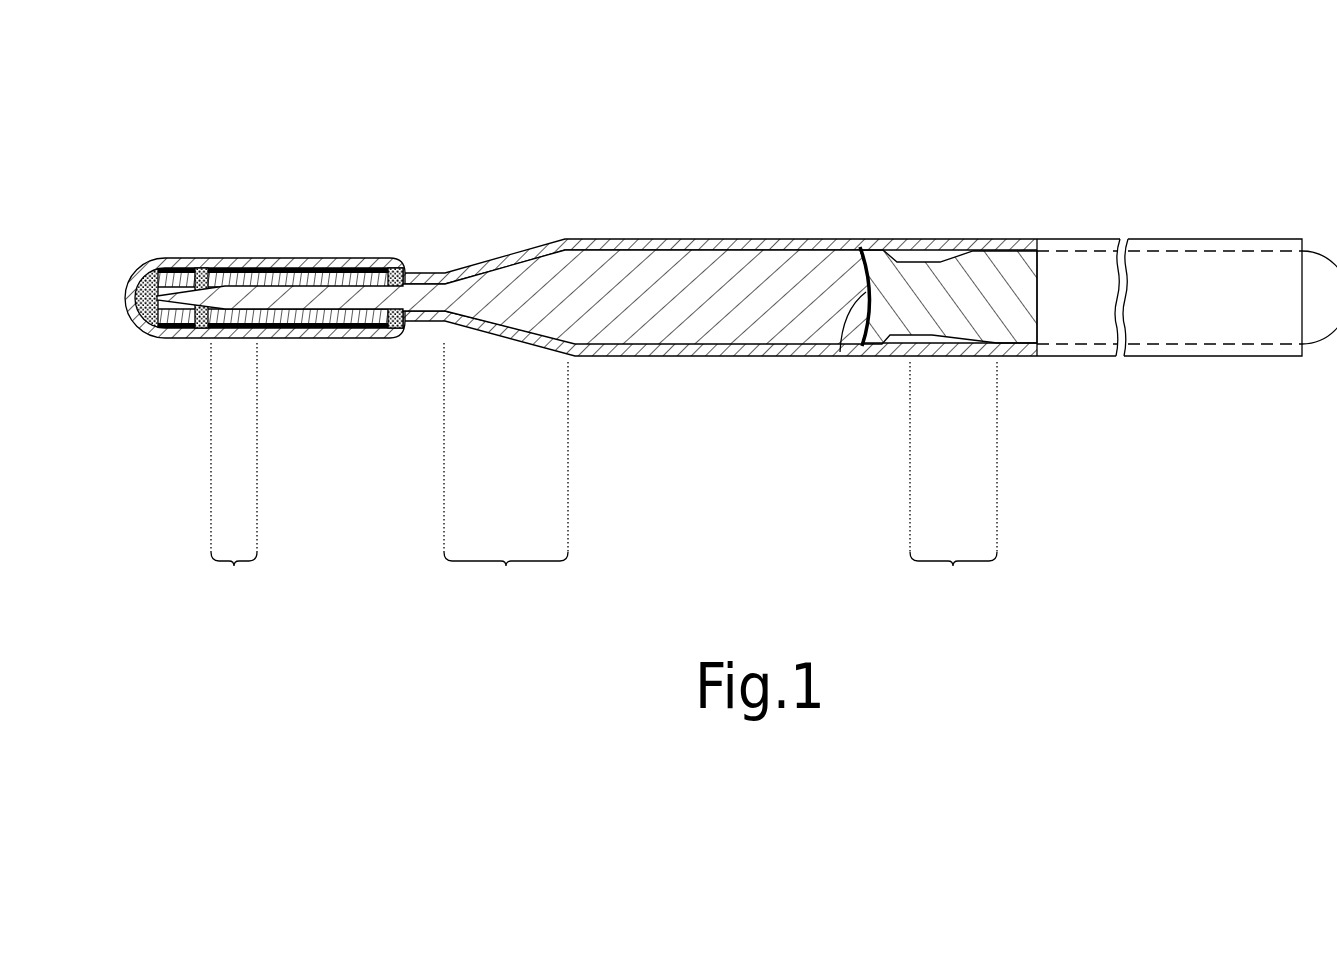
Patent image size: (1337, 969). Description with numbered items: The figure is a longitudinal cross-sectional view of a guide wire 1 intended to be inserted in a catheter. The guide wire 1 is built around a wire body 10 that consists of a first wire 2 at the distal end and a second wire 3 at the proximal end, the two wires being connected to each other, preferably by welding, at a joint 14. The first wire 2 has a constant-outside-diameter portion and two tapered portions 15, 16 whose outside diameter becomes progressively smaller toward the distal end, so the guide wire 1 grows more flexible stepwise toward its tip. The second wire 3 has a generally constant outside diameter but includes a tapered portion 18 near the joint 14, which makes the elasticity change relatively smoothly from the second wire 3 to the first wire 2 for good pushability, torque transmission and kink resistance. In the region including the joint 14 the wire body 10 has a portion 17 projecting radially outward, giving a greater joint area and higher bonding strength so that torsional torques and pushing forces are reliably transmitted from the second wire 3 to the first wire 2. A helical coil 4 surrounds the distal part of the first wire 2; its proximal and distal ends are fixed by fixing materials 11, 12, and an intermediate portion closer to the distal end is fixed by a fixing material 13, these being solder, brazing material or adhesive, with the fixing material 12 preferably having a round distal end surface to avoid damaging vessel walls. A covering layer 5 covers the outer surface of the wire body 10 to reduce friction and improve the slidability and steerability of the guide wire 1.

The guide wire 1 is at (848, 116).
The first wire 2 is at (656, 272).
The second wire 3 is at (1000, 288).
The helical coil 4 is at (306, 258).
The covering layer 5 is at (681, 352).
The wire body 10 is at (1007, 358).
The fixing material 11 is at (396, 261).
The fixing material 12 is at (140, 262).
The fixing material 13 is at (198, 266).
The joint 14 is at (840, 352).
The tapered portion 15 is at (234, 468).
The tapered portion 16 is at (506, 468).
The projecting portion 17 is at (863, 236).
The tapered portion 18 is at (953, 479).